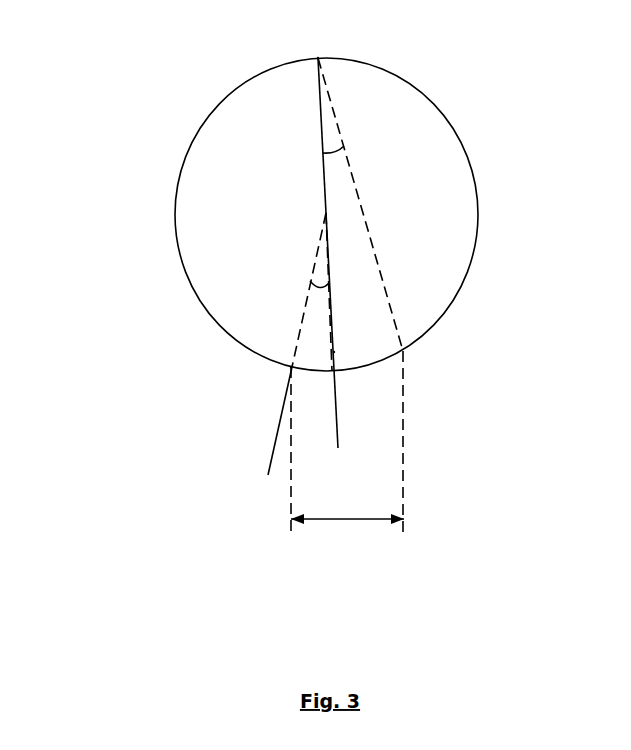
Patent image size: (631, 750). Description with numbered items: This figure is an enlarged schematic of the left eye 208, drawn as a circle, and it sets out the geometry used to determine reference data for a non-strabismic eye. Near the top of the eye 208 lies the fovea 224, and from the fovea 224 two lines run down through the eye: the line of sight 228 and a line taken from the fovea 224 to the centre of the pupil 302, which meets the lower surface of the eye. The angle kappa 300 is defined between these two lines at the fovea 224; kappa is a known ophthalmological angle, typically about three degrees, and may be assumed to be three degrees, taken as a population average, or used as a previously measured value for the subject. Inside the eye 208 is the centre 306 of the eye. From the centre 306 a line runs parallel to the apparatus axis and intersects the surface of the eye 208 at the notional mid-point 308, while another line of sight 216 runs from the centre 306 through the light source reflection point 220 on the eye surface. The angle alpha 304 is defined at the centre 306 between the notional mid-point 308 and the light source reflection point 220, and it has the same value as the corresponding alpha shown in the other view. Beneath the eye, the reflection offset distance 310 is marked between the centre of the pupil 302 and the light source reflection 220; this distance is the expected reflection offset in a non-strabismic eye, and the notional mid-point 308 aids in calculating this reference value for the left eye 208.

The left eye 208 is at (177, 193).
The line of sight 216 is at (282, 412).
The light source reflection point 220 is at (291, 367).
The fovea 224 is at (298, 56).
The line of sight 228 is at (403, 356).
The angle kappa 300 is at (325, 132).
The centre of the pupil 302 is at (334, 352).
The angle alpha 304 is at (317, 268).
The centre of the eye 306 is at (326, 213).
The notional mid-point 308 is at (334, 383).
The reflection offset distance 310 is at (365, 521).